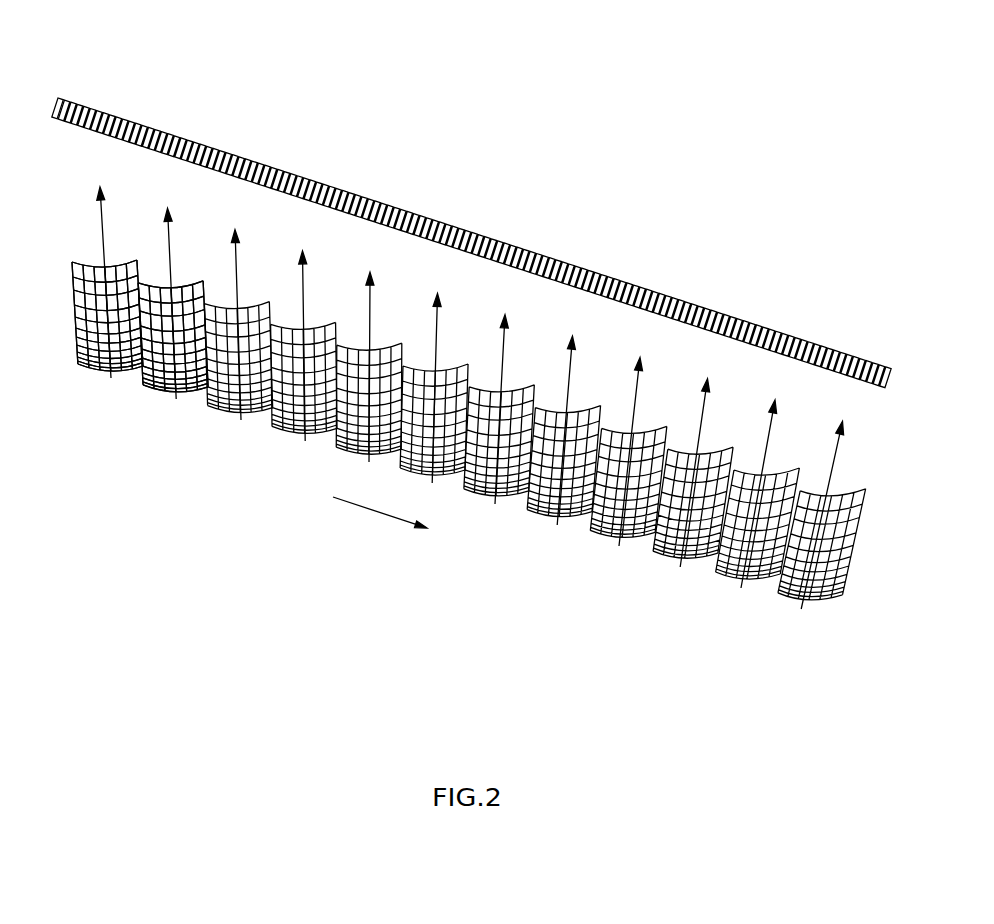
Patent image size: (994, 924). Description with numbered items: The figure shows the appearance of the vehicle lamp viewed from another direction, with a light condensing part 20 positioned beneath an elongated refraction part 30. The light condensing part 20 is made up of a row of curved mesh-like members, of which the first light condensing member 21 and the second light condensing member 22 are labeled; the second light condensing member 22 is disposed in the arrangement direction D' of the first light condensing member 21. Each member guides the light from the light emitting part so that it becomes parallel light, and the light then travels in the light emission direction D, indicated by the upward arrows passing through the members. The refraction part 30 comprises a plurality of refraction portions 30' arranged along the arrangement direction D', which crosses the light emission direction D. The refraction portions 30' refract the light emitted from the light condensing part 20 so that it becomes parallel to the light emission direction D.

The light condensing part 20 is at (171, 460).
The first light condensing member 21 is at (123, 370).
The second light condensing member 22 is at (162, 389).
The refraction part 30 is at (474, 211).
The refraction portion 30' is at (58, 77).
The light emission direction D is at (470, 398).
The arrangement direction D' is at (394, 525).